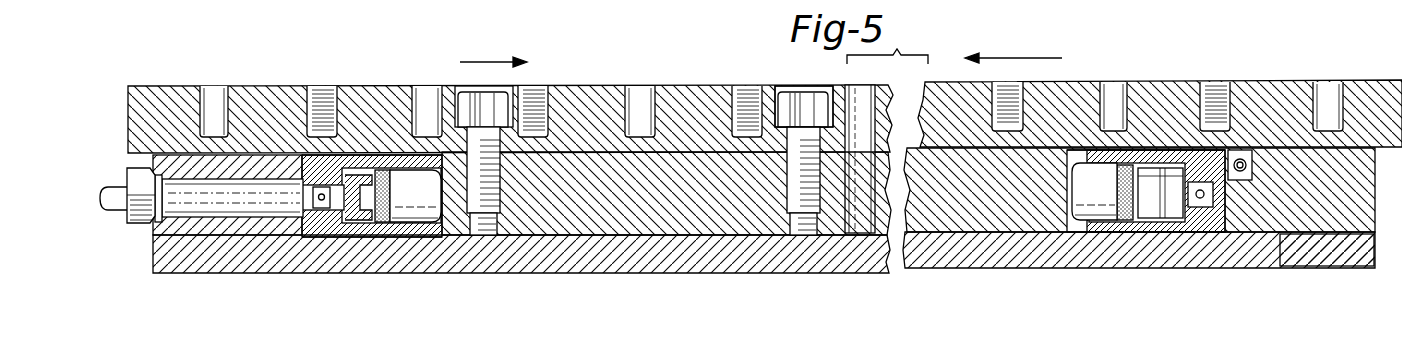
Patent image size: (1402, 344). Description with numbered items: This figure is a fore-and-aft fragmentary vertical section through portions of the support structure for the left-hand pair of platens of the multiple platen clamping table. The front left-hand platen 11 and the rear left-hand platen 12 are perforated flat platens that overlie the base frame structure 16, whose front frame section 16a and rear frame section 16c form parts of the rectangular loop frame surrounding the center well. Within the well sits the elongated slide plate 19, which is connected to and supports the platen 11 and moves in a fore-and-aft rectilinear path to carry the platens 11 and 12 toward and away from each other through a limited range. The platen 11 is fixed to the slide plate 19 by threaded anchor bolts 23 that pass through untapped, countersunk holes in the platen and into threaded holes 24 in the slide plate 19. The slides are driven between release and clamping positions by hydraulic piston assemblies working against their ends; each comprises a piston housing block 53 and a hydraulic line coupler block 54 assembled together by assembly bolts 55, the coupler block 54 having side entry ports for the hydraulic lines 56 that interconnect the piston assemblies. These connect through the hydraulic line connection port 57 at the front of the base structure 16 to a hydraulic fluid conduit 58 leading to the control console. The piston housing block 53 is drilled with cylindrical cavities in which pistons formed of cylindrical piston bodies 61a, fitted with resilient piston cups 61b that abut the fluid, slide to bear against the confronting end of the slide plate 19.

The front left-hand platen 11 is at (355, 88).
The rear left-hand platen 12 is at (1082, 82).
The base frame structure 16 is at (620, 262).
The front frame section 16a is at (153, 265).
The rear frame section 16c is at (1330, 255).
The slide plate 19 is at (716, 215).
The anchor bolt 23 is at (778, 92).
The threaded hole 24 is at (465, 88).
The piston housing block 53 is at (388, 155).
The hydraulic line coupler block 54 is at (302, 228).
The assembly bolt 55 is at (321, 237).
The hydraulic line 56 is at (1246, 150).
The hydraulic line connection port 57 is at (144, 225).
The hydraulic fluid conduit 58 is at (110, 188).
The cylindrical piston body 61a is at (420, 212).
The resilient piston cup 61b is at (382, 226).